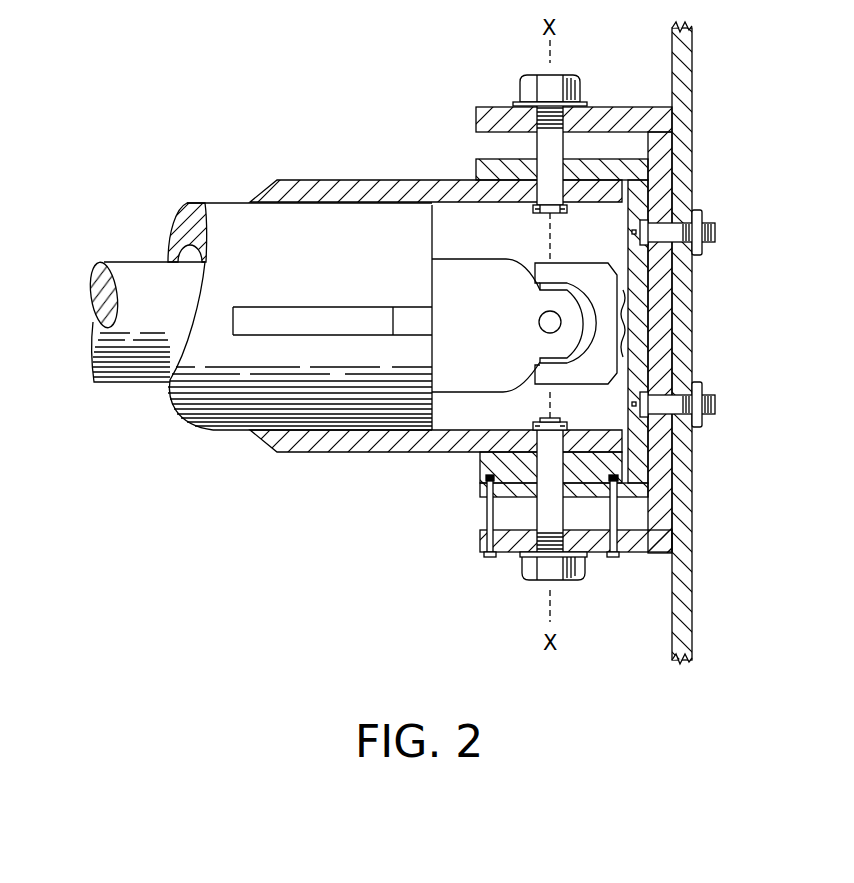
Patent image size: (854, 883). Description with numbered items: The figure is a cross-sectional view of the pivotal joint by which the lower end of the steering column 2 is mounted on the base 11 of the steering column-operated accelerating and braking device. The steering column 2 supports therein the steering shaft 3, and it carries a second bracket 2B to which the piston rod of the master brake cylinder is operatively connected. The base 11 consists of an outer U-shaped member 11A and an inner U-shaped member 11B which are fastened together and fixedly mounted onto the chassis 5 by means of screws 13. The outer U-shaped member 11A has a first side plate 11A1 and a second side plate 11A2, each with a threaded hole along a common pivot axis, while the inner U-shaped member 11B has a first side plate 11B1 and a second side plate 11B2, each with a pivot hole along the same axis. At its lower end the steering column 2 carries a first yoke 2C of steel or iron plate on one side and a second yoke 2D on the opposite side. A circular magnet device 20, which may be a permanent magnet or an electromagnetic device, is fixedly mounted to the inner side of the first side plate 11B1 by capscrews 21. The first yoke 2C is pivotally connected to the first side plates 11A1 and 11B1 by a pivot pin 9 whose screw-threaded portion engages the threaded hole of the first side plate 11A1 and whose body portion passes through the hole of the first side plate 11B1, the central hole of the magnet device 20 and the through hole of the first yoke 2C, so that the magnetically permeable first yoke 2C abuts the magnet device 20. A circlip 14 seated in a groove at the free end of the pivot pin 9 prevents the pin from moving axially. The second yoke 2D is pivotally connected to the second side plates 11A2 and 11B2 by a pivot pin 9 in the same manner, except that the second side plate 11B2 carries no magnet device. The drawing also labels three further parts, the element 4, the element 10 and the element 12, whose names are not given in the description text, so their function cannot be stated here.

The steering column 2 is at (300, 344).
The second bracket 2B is at (325, 337).
The first yoke 2C is at (390, 453).
The second yoke 2D is at (390, 180).
The steering shaft 3 is at (134, 258).
The socket block 4 is at (632, 283).
The chassis 5 is at (692, 60).
The pivot pin 9 is at (563, 75).
The washer 10 is at (583, 102).
The base 11 is at (593, 307).
The outer U-shaped member 11A is at (574, 307).
The first side plate 11A1 is at (482, 537).
The second side plate 11A2 is at (477, 106).
The inner U-shaped member 11B is at (573, 338).
The first side plate 11B1 is at (483, 492).
The second side plate 11B2 is at (477, 165).
The fork 12 is at (537, 390).
The screws 13 is at (717, 232).
The circlip 14 is at (533, 210).
The magnet device 20 is at (483, 475).
The capscrews 21 is at (488, 558).